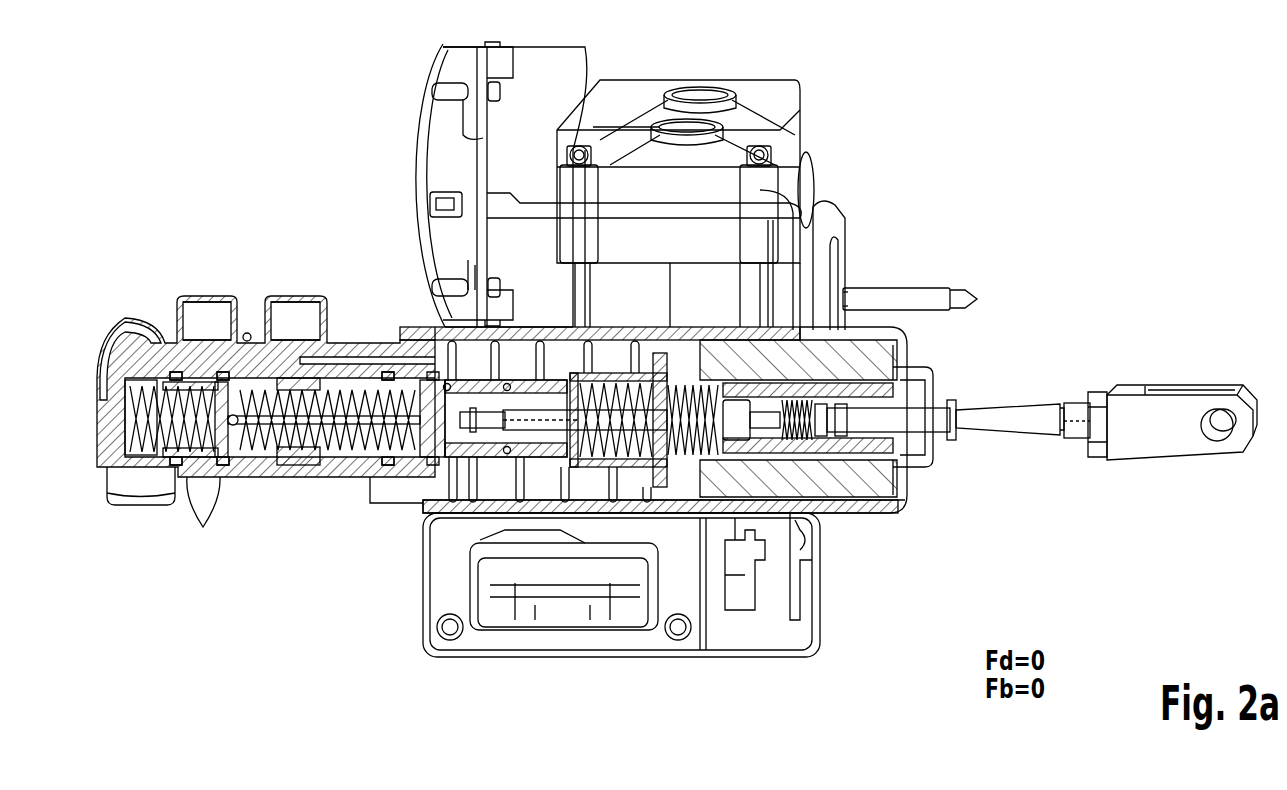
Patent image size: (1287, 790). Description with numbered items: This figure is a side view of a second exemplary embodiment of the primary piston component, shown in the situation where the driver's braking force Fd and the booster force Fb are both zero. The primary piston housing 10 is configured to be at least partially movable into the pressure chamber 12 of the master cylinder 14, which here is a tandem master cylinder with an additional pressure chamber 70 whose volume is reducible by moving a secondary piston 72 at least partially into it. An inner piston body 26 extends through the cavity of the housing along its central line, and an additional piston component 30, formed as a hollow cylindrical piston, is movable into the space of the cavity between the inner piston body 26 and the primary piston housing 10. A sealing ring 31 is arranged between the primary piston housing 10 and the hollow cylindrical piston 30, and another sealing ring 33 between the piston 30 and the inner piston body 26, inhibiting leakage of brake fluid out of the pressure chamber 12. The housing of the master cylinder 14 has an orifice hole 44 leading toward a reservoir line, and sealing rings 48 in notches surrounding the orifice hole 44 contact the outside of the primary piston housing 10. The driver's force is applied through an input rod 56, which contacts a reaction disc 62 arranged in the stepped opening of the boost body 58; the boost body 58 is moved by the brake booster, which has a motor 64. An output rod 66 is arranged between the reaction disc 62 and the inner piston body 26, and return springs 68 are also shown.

The primary piston housing 10 is at (433, 470).
The pressure chamber 12 is at (293, 462).
The master cylinder 14 is at (135, 368).
The inner piston body 26 is at (438, 514).
The additional piston component 30 is at (508, 385).
The sealing ring 31 is at (432, 393).
The sealing ring 33 is at (447, 386).
The orifice hole 44 is at (205, 315).
The sealing rings 48 is at (213, 465).
The input rod 56 is at (1012, 424).
The boost body 58 is at (862, 345).
The reaction disc 62 is at (737, 433).
The motor 64 is at (712, 186).
The output rod 66 is at (668, 425).
The return springs 68 is at (150, 442).
The additional pressure chamber 70 is at (148, 455).
The secondary piston 72 is at (246, 333).